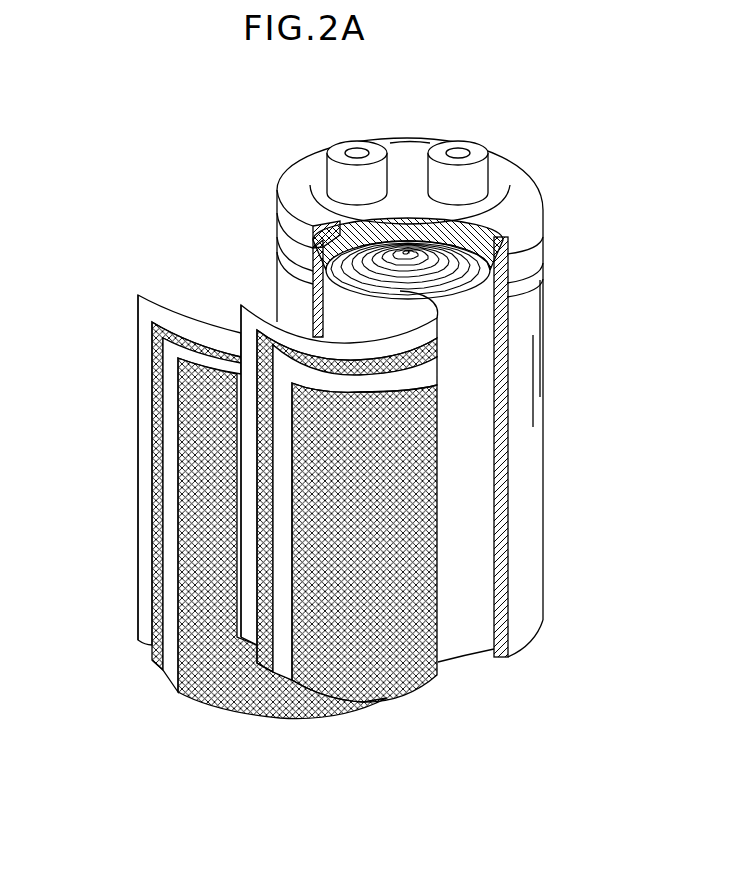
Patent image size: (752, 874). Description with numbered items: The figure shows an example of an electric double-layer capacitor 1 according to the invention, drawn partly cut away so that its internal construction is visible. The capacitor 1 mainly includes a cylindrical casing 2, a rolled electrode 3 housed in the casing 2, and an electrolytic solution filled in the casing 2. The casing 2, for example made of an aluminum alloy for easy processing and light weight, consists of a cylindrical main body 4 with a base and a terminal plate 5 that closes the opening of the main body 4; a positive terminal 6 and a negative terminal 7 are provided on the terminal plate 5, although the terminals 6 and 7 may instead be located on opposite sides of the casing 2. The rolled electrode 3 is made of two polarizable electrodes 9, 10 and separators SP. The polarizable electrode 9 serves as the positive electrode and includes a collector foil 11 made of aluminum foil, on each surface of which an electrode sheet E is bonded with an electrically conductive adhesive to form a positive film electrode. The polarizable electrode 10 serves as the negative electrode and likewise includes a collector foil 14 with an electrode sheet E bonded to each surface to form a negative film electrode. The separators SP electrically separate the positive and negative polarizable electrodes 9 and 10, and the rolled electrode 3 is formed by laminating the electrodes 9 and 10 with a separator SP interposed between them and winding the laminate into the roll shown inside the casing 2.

The electric double-layer capacitor 1 is at (333, 467).
The cylindrical casing 2 is at (442, 400).
The rolled electrode 3 is at (475, 510).
The cylindrical main body 4 is at (520, 388).
The terminal plate 5 is at (320, 197).
The positive terminal 6 is at (342, 148).
The negative terminal 7 is at (470, 150).
The polarizable electrode 9 is at (213, 534).
The polarizable electrode 10 is at (330, 571).
The collector foil 11 is at (173, 610).
The collector foil 14 is at (260, 703).
The separator SP is at (140, 329).
The electrode sheet E is at (160, 625).